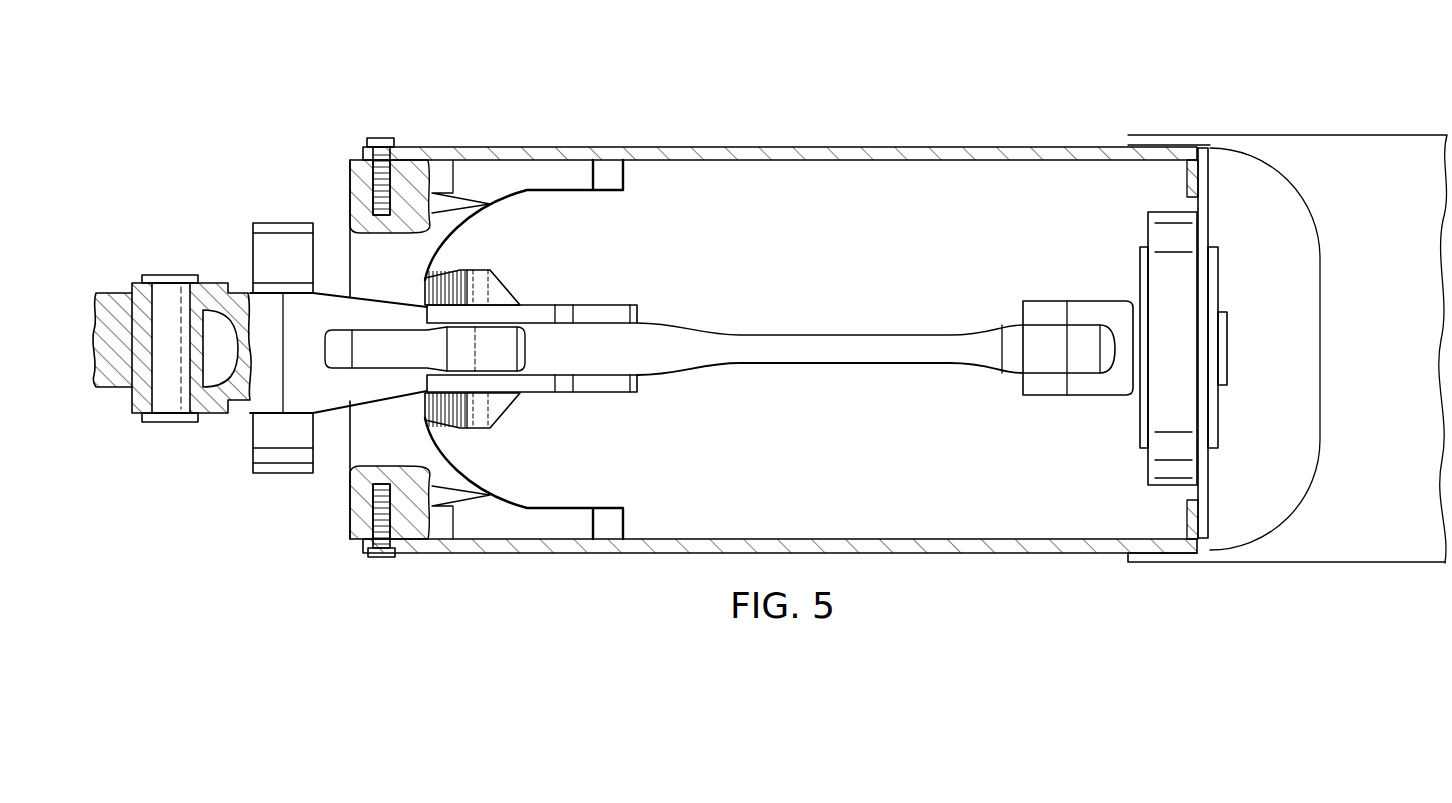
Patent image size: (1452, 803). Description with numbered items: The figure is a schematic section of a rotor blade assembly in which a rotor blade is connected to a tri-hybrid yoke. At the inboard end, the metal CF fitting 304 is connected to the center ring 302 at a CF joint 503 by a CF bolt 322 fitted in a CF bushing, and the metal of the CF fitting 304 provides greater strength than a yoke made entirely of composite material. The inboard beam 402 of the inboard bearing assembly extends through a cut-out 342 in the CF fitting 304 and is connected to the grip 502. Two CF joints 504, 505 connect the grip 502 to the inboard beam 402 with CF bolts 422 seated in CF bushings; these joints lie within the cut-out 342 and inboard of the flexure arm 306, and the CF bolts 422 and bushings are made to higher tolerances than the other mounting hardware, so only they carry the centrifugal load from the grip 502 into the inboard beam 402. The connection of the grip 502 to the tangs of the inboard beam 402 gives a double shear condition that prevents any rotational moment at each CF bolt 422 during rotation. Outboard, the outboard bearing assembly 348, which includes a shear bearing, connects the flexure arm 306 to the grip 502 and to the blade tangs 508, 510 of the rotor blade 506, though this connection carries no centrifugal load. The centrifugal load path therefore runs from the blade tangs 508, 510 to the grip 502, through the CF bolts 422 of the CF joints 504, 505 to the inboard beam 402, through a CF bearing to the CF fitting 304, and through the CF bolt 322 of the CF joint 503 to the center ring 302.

The center ring 302 is at (115, 387).
The CF fitting 304 is at (608, 303).
The flexure arm 306 is at (843, 333).
The CF bolt 322 is at (170, 424).
The cut-out 342 is at (383, 313).
The outboard bearing assembly 348 is at (1140, 278).
The inboard beam 402 is at (358, 216).
The CF bolt 422 is at (380, 137).
The grip 502 is at (787, 147).
The CF joint 503 is at (168, 287).
The CF joint 504 is at (373, 170).
The CF joint 505 is at (370, 525).
The rotor blade 506 is at (1360, 145).
The blade tang 508 is at (1162, 135).
The blade tang 510 is at (1155, 563).